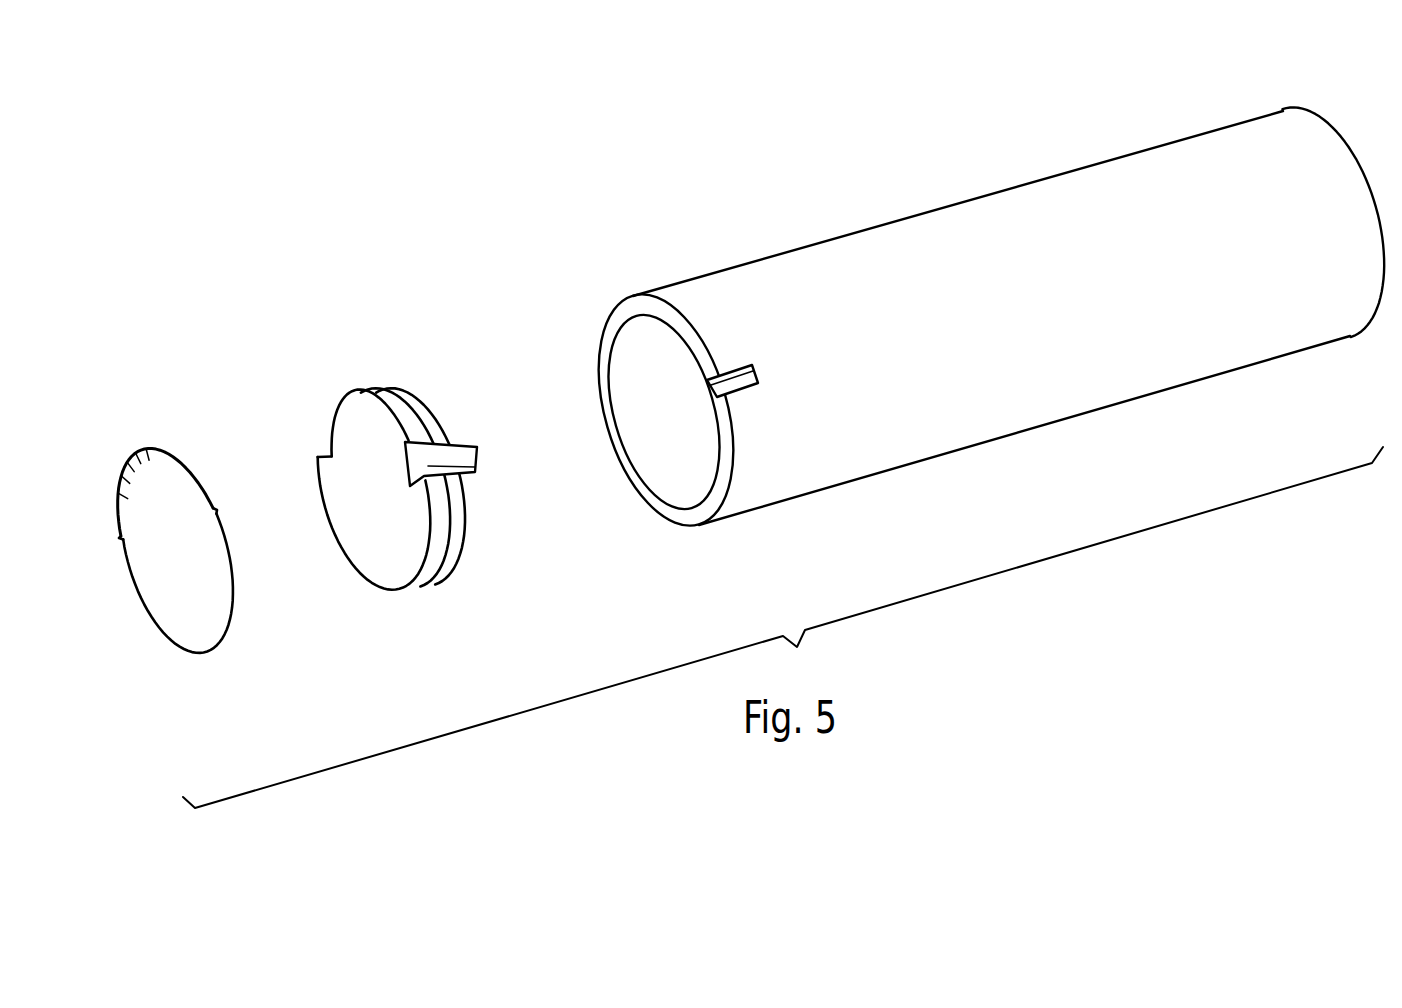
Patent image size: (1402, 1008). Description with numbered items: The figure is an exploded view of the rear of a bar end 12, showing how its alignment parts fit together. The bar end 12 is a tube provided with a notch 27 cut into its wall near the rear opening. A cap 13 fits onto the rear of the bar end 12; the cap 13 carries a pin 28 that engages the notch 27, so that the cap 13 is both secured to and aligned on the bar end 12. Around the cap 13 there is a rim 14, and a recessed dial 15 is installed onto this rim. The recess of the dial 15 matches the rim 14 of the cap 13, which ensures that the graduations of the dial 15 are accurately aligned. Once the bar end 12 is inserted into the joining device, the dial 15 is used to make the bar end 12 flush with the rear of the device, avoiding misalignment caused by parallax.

The bar end 12 is at (857, 480).
The cap 13 is at (366, 389).
The cap skirt ring 14 is at (352, 548).
The recessed dial 15 is at (194, 652).
The notch 27 is at (743, 365).
The locking tab of cap 28 is at (478, 463).